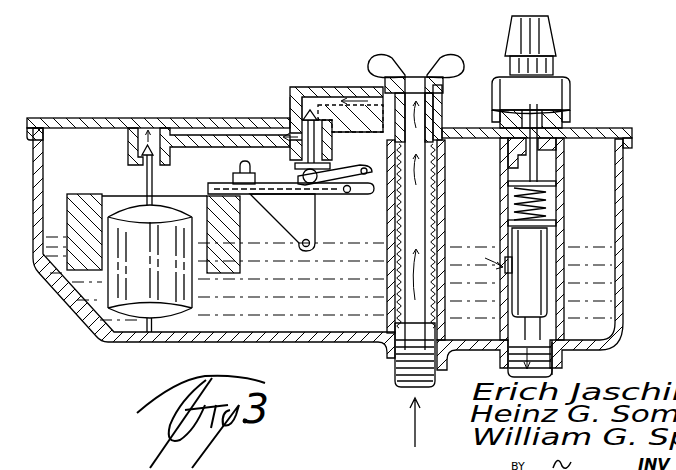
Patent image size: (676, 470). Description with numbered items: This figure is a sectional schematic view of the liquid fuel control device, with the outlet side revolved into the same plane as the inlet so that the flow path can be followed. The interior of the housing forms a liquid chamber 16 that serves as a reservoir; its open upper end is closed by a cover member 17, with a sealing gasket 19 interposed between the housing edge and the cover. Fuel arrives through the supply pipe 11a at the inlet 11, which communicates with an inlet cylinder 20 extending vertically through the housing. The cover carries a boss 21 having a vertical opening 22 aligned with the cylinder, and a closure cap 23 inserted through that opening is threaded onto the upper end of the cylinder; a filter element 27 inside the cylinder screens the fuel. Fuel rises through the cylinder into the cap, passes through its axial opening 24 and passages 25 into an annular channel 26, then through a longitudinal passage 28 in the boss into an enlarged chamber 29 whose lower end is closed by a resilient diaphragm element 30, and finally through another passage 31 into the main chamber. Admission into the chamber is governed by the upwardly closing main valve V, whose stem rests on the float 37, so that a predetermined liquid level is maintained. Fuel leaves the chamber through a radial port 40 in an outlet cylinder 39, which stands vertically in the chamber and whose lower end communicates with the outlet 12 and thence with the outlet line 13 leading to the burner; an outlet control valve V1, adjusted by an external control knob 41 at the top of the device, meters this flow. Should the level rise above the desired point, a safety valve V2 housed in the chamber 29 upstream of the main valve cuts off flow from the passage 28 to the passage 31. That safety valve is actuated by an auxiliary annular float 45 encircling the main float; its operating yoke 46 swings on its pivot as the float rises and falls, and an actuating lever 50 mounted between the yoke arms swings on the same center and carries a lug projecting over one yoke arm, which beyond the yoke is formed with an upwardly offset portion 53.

The inlet 11 is at (392, 355).
The supply pipe 11a is at (396, 387).
The outlet 12 is at (556, 357).
The outlet line 13 is at (508, 354).
The liquid chamber 16 is at (42, 172).
The cover member 17 is at (64, 118).
The sealing gasket 19 is at (34, 119).
The inlet cylinder 20 is at (444, 192).
The boss 21 is at (330, 88).
The vertical opening 22 is at (443, 126).
The closure cap 23 is at (350, 115).
The axial opening 24 is at (414, 90).
The passages 25 is at (400, 80).
The annular channel 26 is at (440, 107).
The filter element 27 is at (433, 224).
The longitudinal passage 28 is at (302, 106).
The enlarged chamber 29 is at (296, 133).
The resilient diaphragm element 30 is at (296, 172).
The passage 31 is at (168, 131).
The float 37 is at (188, 308).
The outlet cylinder 39 is at (556, 228).
The radial port 40 is at (505, 281).
The external control knob 41 is at (558, 47).
The auxiliary annular float 45 is at (67, 212).
The operating yoke 46 is at (232, 234).
The actuating lever 50 is at (284, 223).
The upwardly offset portion 53 is at (236, 172).
The main valve V is at (140, 178).
The outlet control valve V1 is at (541, 252).
The safety valve V2 is at (304, 113).